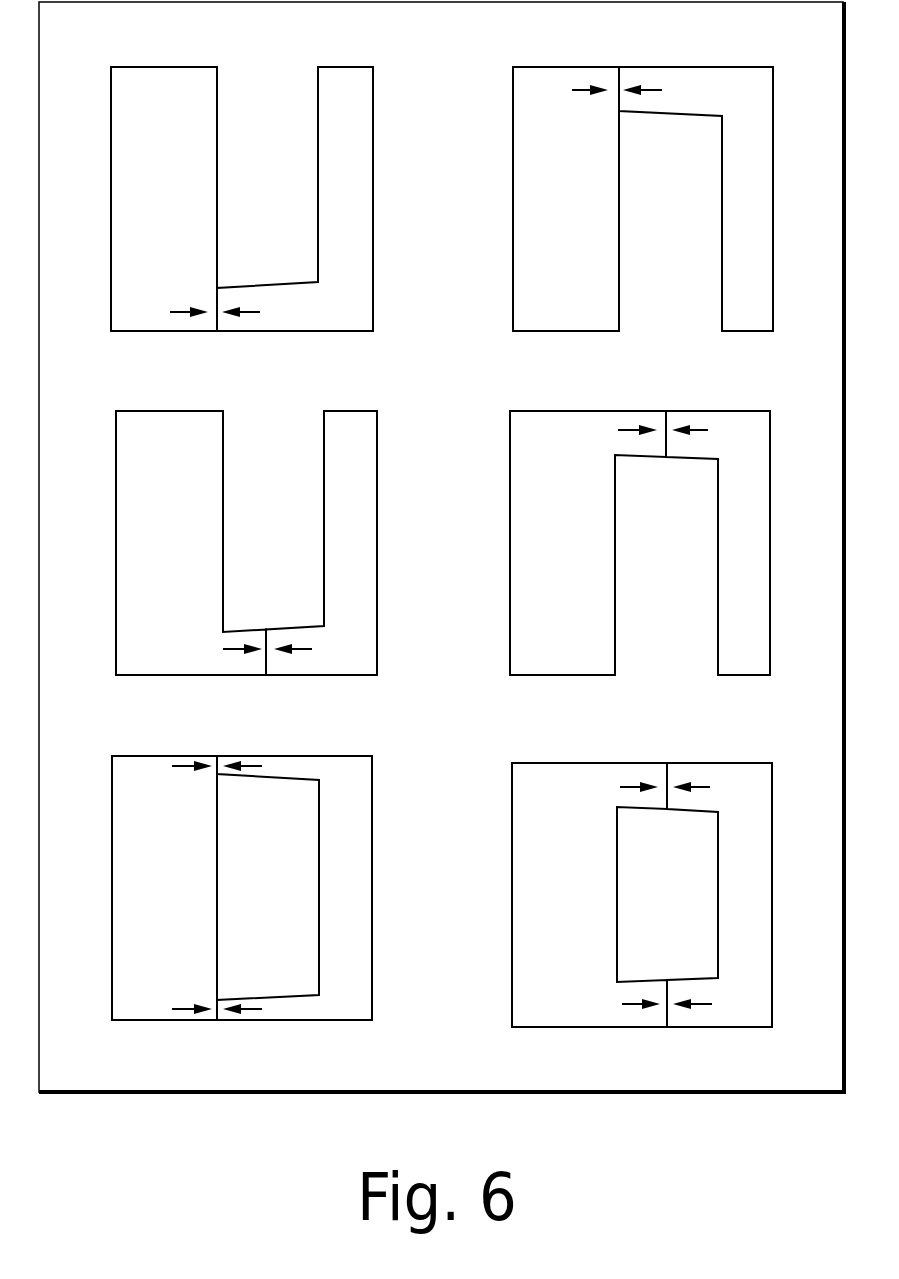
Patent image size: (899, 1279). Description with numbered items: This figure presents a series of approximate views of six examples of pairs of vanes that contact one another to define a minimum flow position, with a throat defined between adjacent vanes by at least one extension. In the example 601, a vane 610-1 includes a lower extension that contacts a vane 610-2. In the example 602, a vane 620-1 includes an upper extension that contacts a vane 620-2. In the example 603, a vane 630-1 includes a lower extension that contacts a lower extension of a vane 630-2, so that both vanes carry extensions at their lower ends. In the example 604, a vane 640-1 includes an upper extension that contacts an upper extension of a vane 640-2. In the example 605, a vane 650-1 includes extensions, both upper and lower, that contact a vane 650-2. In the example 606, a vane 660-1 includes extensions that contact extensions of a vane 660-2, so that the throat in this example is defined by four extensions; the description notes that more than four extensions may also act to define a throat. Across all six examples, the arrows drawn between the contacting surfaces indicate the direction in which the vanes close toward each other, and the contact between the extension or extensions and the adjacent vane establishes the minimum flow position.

The example 601 is at (242, 179).
The example 602 is at (635, 178).
The example 603 is at (246, 520).
The example 604 is at (640, 519).
The example 605 is at (225, 863).
The example 606 is at (642, 873).
The vane 610-1 is at (346, 85).
The vane 610-2 is at (190, 86).
The vane 620-1 is at (723, 83).
The vane 620-2 is at (567, 83).
The vane 630-1 is at (350, 425).
The vane 630-2 is at (195, 425).
The vane 640-1 is at (741, 420).
The vane 640-2 is at (587, 420).
The vane 650-1 is at (305, 765).
The vane 650-2 is at (149, 765).
The vane 660-1 is at (741, 777).
The vane 660-2 is at (587, 777).